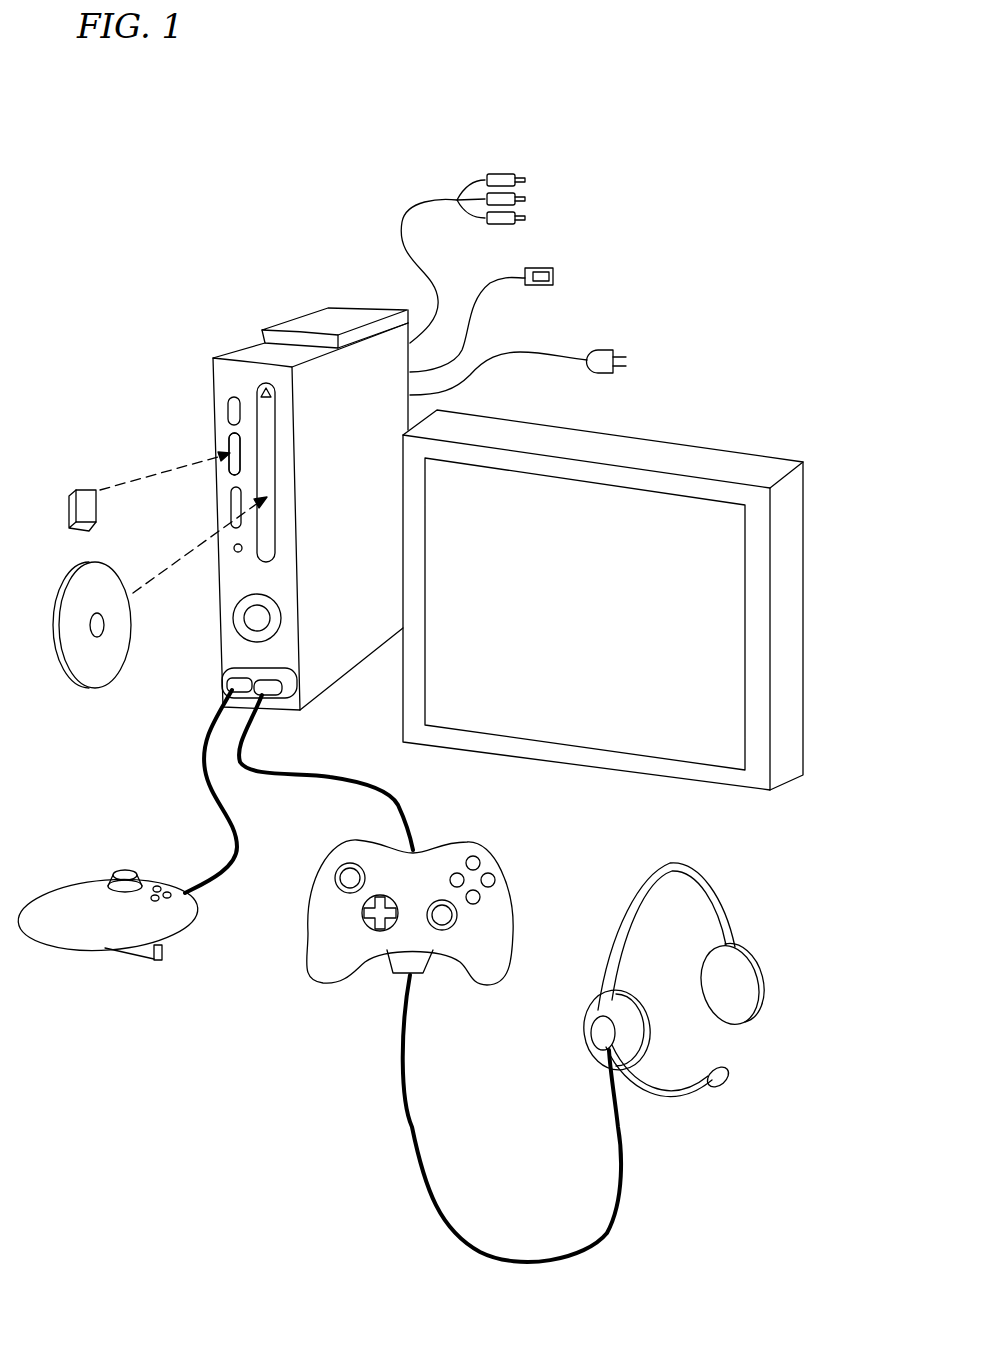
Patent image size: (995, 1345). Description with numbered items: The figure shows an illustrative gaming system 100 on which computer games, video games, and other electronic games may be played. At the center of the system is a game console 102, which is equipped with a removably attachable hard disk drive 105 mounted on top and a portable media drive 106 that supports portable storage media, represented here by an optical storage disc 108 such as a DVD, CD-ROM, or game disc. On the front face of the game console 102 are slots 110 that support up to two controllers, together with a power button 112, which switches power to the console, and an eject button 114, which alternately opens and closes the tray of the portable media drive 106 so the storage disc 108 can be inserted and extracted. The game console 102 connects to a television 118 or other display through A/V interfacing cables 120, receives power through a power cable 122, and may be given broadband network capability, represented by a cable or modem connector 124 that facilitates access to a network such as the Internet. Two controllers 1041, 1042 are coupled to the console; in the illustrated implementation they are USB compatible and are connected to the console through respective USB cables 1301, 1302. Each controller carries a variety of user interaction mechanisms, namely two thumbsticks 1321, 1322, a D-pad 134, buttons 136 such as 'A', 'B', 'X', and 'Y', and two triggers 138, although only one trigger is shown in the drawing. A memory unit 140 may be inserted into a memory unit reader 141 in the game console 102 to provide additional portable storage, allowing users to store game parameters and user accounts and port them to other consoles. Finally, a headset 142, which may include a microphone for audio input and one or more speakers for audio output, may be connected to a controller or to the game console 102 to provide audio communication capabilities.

The gaming system 100 is at (422, 90).
The game console 102 is at (212, 373).
The removably attachable hard disk drive 105 is at (335, 318).
The portable media drive 106 is at (265, 443).
The optical storage disc 108 is at (95, 690).
The slots 110 is at (240, 672).
The power button 112 is at (260, 620).
The eject button 114 is at (265, 383).
The television 118 is at (765, 456).
The A/V interfacing cables 120 is at (535, 167).
The power cable 122 is at (600, 375).
The cable or modem connector 124 is at (540, 287).
The USB cable 1301 is at (225, 803).
The USB cable 1302 is at (410, 803).
The controller 1041 is at (515, 917).
The controller 1042 is at (62, 882).
The thumbstick 1321 is at (350, 878).
The thumbstick 1322 is at (128, 868).
The D-pad 134 is at (378, 915).
The buttons 136 is at (512, 865).
The triggers 138 is at (165, 955).
The memory unit 140 is at (82, 486).
The memory unit reader 141 is at (230, 445).
The headset 142 is at (715, 893).